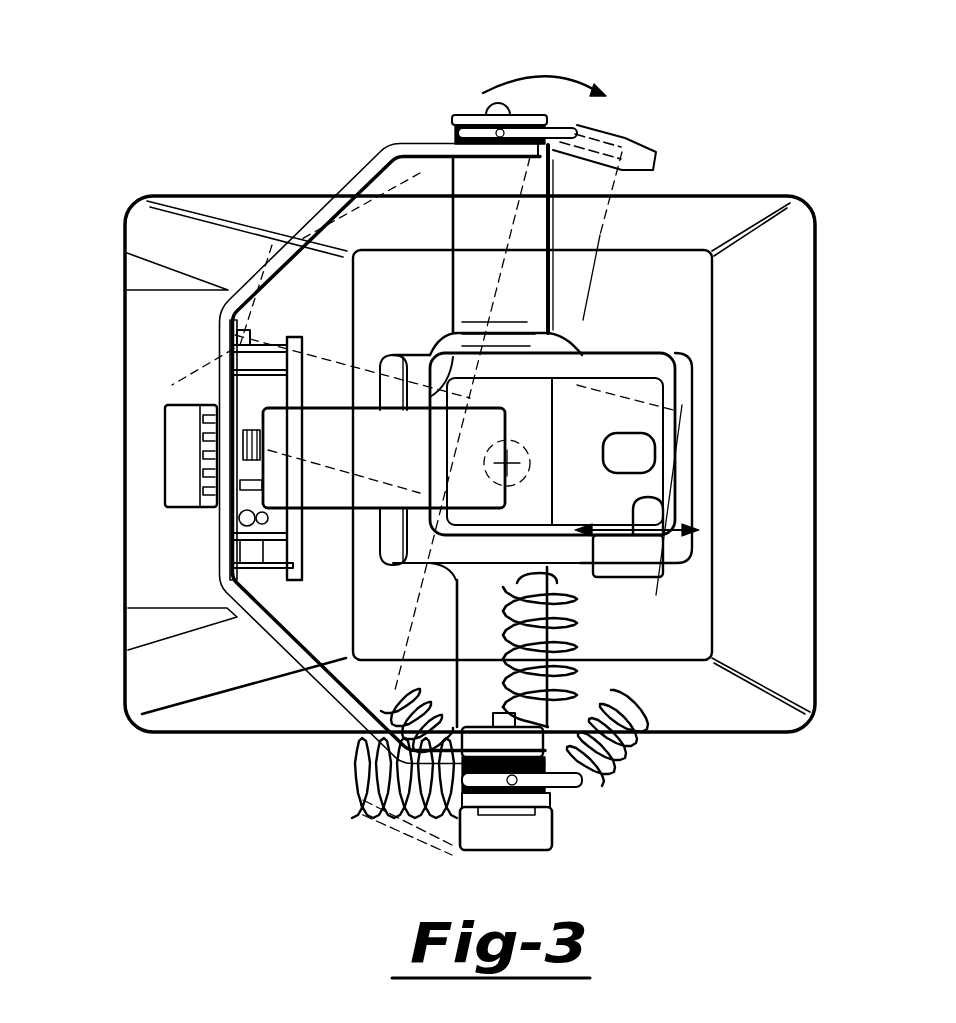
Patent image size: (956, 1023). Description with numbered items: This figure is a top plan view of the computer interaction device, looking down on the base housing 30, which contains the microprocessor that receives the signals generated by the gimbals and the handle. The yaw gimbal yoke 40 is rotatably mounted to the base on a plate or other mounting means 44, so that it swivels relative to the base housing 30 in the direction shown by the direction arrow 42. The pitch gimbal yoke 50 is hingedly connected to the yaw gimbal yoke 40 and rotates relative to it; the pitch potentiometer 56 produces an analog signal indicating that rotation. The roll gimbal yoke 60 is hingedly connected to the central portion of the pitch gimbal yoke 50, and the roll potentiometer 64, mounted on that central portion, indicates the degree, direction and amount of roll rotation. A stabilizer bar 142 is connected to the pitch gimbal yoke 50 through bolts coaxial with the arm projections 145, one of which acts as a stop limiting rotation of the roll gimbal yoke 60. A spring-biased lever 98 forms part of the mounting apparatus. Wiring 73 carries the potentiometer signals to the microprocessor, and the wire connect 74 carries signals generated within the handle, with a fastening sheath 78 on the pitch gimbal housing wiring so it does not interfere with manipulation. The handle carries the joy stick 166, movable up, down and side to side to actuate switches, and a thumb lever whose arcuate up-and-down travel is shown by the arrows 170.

The base housing 30 is at (668, 303).
The yaw gimbal yoke 40 is at (552, 232).
The direction arrow 42 is at (533, 76).
The plate or mounting means 44 is at (536, 459).
The pitch gimbal yoke 50 is at (367, 160).
The pitch potentiometer 56 is at (490, 853).
The roll gimbal yoke 60 is at (350, 408).
The roll potentiometer 64 is at (165, 440).
The wiring 73 is at (378, 800).
The wire connect 74 is at (580, 632).
The fastening sheath 78 is at (282, 683).
The lever 98 is at (574, 128).
The stabilizer bar 142 is at (303, 520).
The arm projections 145 is at (270, 337).
The joy stick 166 is at (650, 433).
The arrows 170 is at (635, 525).